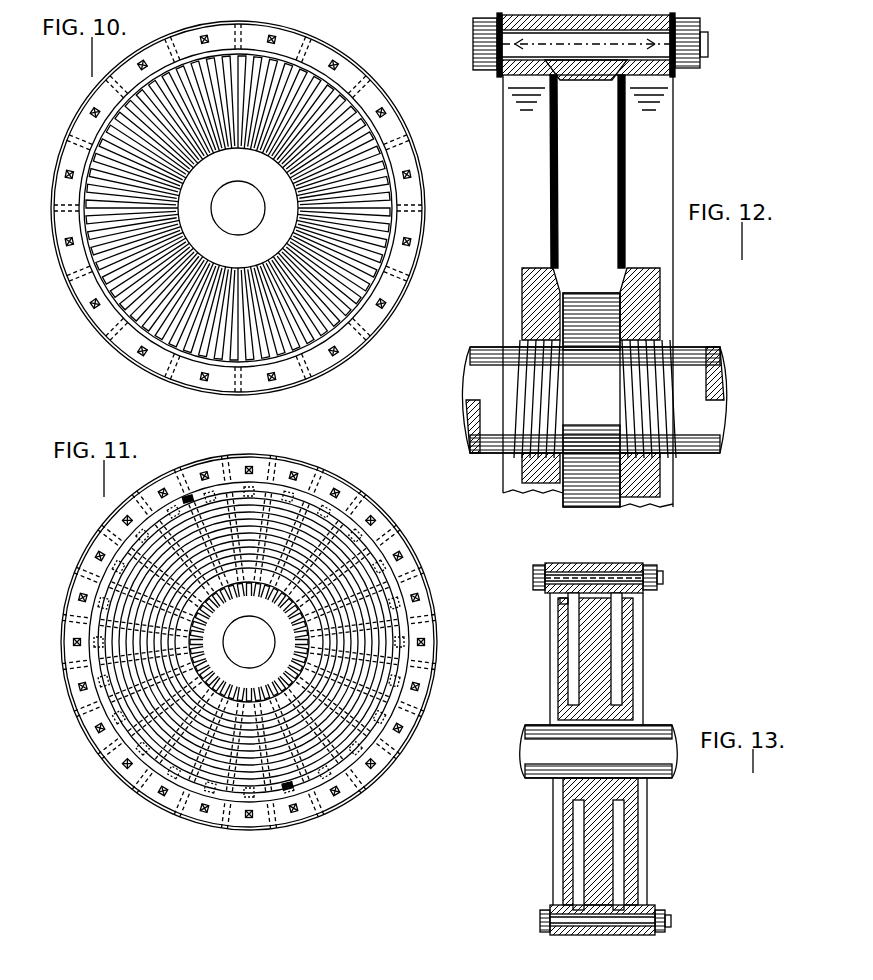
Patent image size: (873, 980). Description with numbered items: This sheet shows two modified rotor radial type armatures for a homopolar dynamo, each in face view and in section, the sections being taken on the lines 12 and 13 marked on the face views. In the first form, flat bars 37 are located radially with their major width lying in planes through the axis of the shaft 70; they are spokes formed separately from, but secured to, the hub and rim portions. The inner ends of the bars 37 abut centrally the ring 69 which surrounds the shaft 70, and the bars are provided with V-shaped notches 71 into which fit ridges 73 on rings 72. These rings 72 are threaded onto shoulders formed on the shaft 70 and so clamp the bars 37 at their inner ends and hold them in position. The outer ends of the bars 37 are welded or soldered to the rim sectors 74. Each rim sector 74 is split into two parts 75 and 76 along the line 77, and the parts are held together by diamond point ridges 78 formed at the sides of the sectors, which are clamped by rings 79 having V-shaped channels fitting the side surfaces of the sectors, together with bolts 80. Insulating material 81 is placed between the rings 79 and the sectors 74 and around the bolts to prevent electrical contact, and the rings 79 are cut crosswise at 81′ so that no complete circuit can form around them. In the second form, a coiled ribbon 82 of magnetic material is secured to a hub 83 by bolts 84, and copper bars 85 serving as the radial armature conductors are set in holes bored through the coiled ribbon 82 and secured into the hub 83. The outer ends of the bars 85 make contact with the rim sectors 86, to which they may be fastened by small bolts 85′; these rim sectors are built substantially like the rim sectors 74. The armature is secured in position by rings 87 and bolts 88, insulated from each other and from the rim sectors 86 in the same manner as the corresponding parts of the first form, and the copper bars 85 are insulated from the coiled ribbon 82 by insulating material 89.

In FIG. 10, the section line 12- 12 is at (265, 36).
In FIG. 11, the section line 13- 13 is at (252, 800).
In FIG. 10, the flat bars 37 is at (347, 294).
In FIG. 12, the flat bars 37 is at (592, 185).
In FIG. 12, the ring 69 is at (594, 337).
In FIG. 12, the shaft 70 is at (717, 357).
In FIG. 12, the V-shaped notches 71 is at (566, 292).
In FIG. 12, the rings 72 is at (648, 290).
In FIG. 12, the ridges 73 is at (561, 282).
In FIG. 10, the rim sectors 74 is at (335, 52).
In FIG. 12, the rim sectors 74 is at (613, 14).
In FIG. 12, the part of rim sector 75 is at (560, 12).
In FIG. 12, the part of rim sector 76 is at (585, 81).
In FIG. 12, the split line 77 is at (627, 91).
In FIG. 12, the diamond point ridges 78 is at (707, 43).
In FIG. 12, the rings 79 is at (672, 79).
In FIG. 12, the bolts 80 is at (475, 43).
In FIG. 12, the insulating material 81 is at (696, 71).
In FIG. 10, the rod 81′ is at (297, 356).
In FIG. 12, the rod 81′ is at (624, 148).
In FIG. 11, the coiled ribbon 82 is at (383, 663).
In FIG. 11, the hub 83 is at (397, 688).
In FIG. 11, the bolts 84 is at (224, 488).
In FIG. 11, the copper bars 85 is at (382, 554).
In FIG. 13, the copper bars 85 is at (572, 636).
In FIG. 11, the small bolts 85′ is at (397, 638).
In FIG. 13, the small bolts 85′ is at (560, 600).
In FIG. 11, the rim sectors 86 is at (430, 584).
In FIG. 13, the rim sectors 86 is at (590, 562).
In FIG. 13, the rings 87 is at (636, 610).
In FIG. 13, the bolts 88 is at (658, 573).
In FIG. 13, the insulating material 89 is at (630, 648).